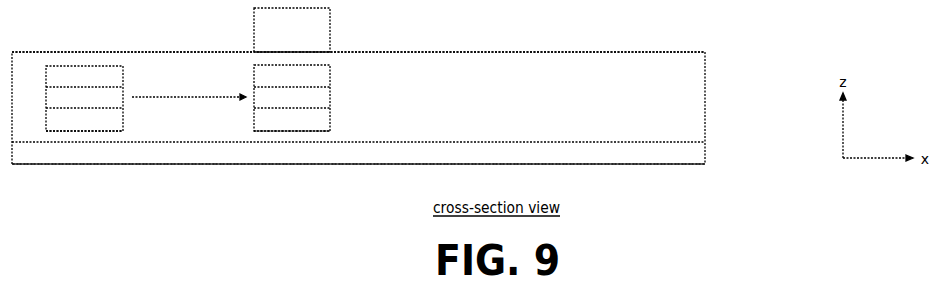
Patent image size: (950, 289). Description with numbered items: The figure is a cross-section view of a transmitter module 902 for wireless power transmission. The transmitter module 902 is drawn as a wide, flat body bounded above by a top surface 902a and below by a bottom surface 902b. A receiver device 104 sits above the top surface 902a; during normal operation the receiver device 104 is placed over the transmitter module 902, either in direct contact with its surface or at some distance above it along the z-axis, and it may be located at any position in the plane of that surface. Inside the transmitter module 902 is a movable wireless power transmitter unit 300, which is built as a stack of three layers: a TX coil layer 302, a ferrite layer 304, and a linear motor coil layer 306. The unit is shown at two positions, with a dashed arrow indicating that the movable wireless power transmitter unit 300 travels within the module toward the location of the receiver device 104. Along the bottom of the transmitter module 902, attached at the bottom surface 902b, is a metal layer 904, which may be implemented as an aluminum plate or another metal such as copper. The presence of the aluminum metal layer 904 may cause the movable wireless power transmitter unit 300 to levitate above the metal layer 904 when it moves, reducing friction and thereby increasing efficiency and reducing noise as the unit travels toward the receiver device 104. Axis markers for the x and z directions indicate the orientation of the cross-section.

The receiver device 104 is at (279, 40).
The movable wireless power transmitter unit 300 is at (124, 118).
The TX coil layer 302 is at (71, 85).
The ferrite layer 304 is at (71, 106).
The linear motor coil layer 306 is at (71, 128).
The transmitter module 902 is at (705, 113).
The top surface 902a is at (631, 52).
The bottom surface 902b is at (643, 164).
The metal layer 904 is at (345, 161).